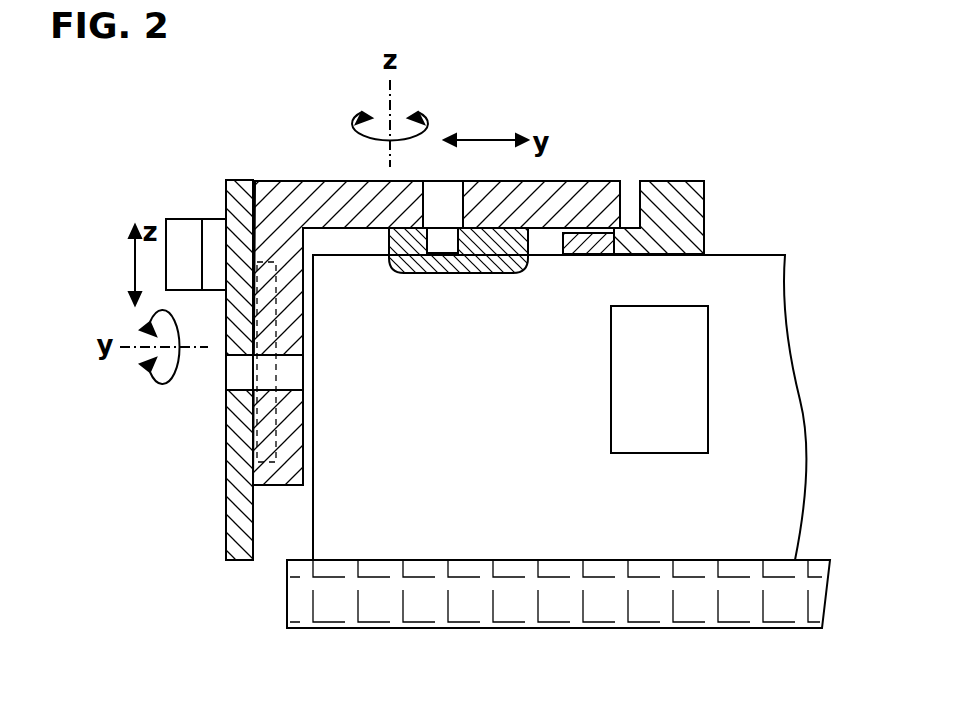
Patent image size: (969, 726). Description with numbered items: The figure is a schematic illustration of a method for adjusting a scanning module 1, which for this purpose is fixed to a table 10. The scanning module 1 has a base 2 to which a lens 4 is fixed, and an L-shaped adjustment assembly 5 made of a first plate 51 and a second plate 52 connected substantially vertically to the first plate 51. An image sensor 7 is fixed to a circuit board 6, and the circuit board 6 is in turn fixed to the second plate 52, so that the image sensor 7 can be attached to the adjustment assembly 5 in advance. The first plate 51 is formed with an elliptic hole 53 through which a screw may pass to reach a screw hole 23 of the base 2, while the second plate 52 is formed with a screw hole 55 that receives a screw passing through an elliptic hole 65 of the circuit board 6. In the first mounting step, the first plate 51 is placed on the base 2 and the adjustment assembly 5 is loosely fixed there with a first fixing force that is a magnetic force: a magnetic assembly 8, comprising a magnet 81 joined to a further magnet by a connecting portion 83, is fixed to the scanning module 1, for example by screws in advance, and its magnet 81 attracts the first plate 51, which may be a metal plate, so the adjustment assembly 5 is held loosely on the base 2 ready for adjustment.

The scanning module 1 is at (793, 418).
The base 2 is at (458, 307).
The lens 4 is at (633, 448).
The adjustment assembly 5 is at (429, 338).
The circuit board 6 is at (188, 372).
The image sensor 7 is at (272, 300).
The magnetic assembly 8 is at (481, 253).
The table 10 is at (467, 617).
The screw hole 23 is at (440, 255).
The first plate 51 is at (588, 181).
The second plate 52 is at (283, 487).
The elliptic hole 53 is at (443, 181).
The screw hole 55 is at (298, 372).
The elliptic hole 65 is at (232, 376).
The magnet 81 is at (217, 232).
The connecting portion 83 is at (185, 232).